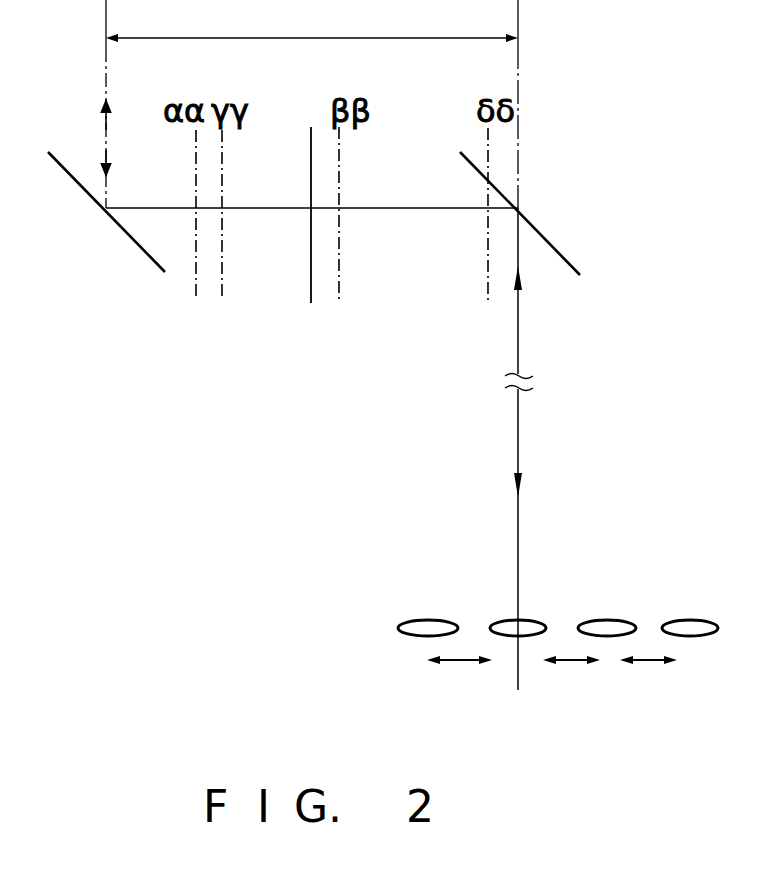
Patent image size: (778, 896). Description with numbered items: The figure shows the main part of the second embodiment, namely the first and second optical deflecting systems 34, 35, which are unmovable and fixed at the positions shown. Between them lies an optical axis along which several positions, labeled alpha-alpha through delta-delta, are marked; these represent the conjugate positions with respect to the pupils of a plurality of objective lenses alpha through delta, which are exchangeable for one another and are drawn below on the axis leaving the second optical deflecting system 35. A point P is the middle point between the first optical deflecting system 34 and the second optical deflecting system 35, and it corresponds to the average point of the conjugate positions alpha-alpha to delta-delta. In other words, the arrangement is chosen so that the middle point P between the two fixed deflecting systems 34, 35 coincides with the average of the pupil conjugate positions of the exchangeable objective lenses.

The first optical deflecting system 34 is at (70, 172).
The second optical deflecting system 35 is at (555, 250).
The middle point P is at (299, 322).